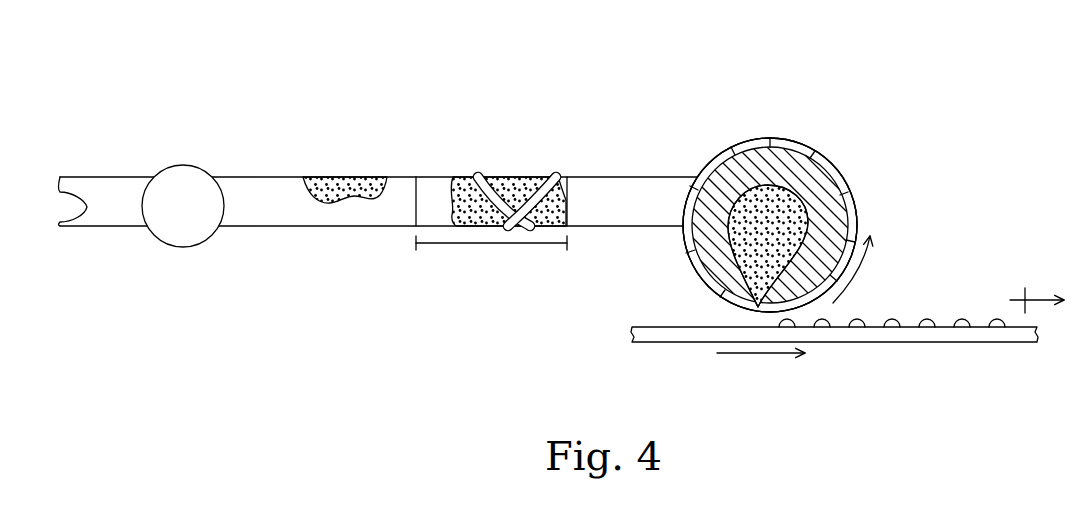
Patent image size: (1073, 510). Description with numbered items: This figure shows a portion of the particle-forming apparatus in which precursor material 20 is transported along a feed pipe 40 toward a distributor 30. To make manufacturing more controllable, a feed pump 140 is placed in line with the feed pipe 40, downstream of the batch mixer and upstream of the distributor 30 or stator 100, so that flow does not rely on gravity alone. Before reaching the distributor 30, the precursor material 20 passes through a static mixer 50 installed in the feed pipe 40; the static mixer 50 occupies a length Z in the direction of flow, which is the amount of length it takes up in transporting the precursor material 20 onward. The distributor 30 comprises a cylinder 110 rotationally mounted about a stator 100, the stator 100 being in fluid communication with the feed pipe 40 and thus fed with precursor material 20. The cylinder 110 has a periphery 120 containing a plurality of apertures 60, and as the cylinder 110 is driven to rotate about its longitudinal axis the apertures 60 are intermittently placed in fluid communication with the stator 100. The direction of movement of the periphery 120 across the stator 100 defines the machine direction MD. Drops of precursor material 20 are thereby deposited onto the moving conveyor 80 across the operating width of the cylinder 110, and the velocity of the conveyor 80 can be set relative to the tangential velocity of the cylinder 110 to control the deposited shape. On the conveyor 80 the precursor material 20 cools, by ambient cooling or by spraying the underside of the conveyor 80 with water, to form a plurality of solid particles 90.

The precursor material 20 is at (333, 187).
The distributor 30 is at (866, 174).
The feed pipe 40 is at (267, 203).
The static mixer 50 is at (439, 198).
The apertures 60 is at (805, 143).
The conveyor 80 is at (672, 335).
The solid particles 90 is at (857, 318).
The stator 100 is at (860, 222).
The cylinder 110 is at (827, 157).
The periphery 120 is at (760, 308).
The feed pump 140 is at (183, 227).
The machine direction MD is at (1042, 300).
The length of static mixer Z is at (492, 247).